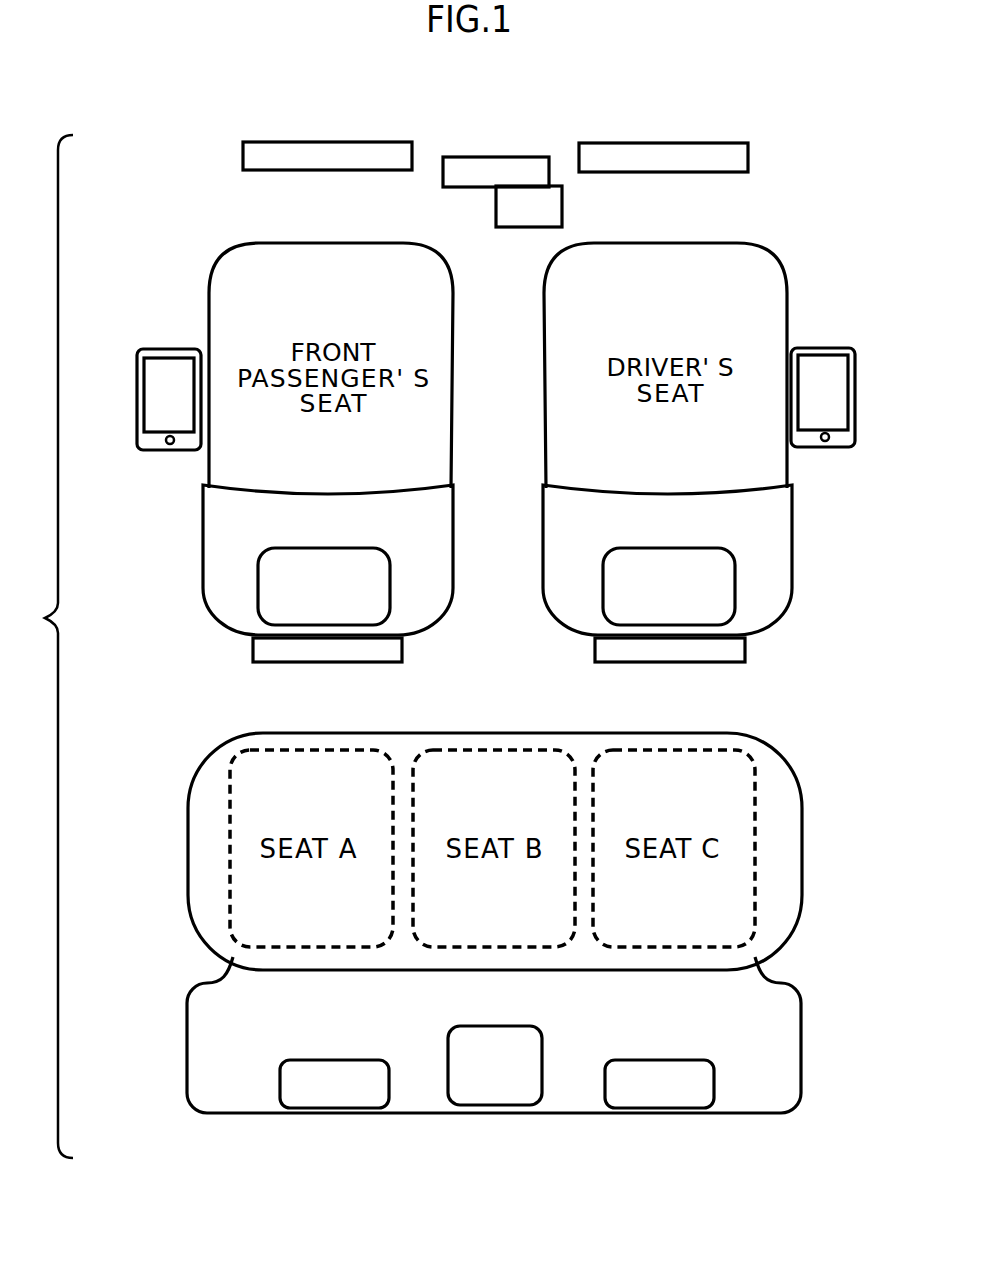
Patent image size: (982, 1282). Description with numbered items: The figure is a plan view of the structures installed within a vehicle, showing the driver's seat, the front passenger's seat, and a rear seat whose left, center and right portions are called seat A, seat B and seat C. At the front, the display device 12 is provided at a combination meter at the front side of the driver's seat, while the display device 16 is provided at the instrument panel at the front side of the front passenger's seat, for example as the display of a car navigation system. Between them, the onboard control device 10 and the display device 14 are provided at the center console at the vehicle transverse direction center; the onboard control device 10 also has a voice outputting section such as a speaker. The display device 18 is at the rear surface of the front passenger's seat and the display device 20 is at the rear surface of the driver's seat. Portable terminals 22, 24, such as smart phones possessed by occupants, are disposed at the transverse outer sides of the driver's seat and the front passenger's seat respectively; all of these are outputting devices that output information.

The onboard control device 10 is at (562, 198).
The display device 12 is at (663, 143).
The display device 14 is at (493, 157).
The display device 16 is at (327, 142).
The display device 18 is at (402, 642).
The display device 20 is at (745, 642).
The portable terminal 22 is at (823, 348).
The portable terminal 24 is at (172, 349).